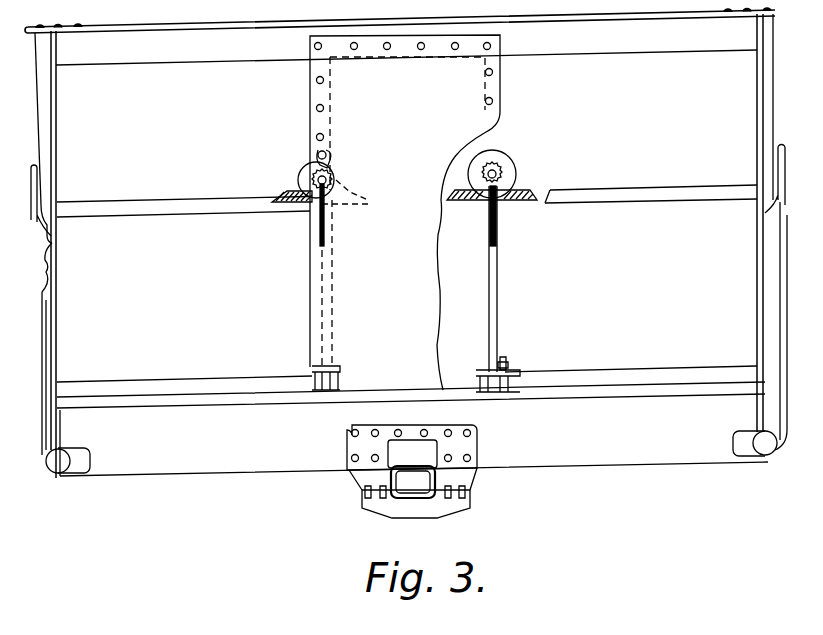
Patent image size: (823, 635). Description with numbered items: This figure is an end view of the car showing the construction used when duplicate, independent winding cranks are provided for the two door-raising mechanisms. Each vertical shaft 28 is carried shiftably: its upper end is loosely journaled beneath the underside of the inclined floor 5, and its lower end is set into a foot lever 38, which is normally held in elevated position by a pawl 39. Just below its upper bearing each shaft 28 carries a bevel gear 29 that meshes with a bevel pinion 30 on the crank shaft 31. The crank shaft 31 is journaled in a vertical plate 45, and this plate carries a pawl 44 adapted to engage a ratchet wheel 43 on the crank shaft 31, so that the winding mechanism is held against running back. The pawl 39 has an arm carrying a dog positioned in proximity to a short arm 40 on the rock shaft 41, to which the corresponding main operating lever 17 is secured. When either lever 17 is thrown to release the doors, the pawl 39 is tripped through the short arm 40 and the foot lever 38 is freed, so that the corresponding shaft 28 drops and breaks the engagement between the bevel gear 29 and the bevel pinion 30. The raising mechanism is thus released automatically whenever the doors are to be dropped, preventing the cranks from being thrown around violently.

The inclined floor 5 is at (651, 232).
The main operating lever 17 is at (31, 196).
The shaft 28 is at (498, 293).
The bevel gear 29 is at (360, 198).
The bevel pinion 30 is at (500, 165).
The crank shaft 31 is at (325, 228).
The foot lever 38 is at (338, 364).
The pawl 39 is at (506, 358).
The short arm 40 is at (508, 364).
The rock shaft 41 is at (238, 366).
The ratchet wheel 43 is at (334, 177).
The pawl 44 is at (330, 153).
The vertical plate 45 is at (405, 212).